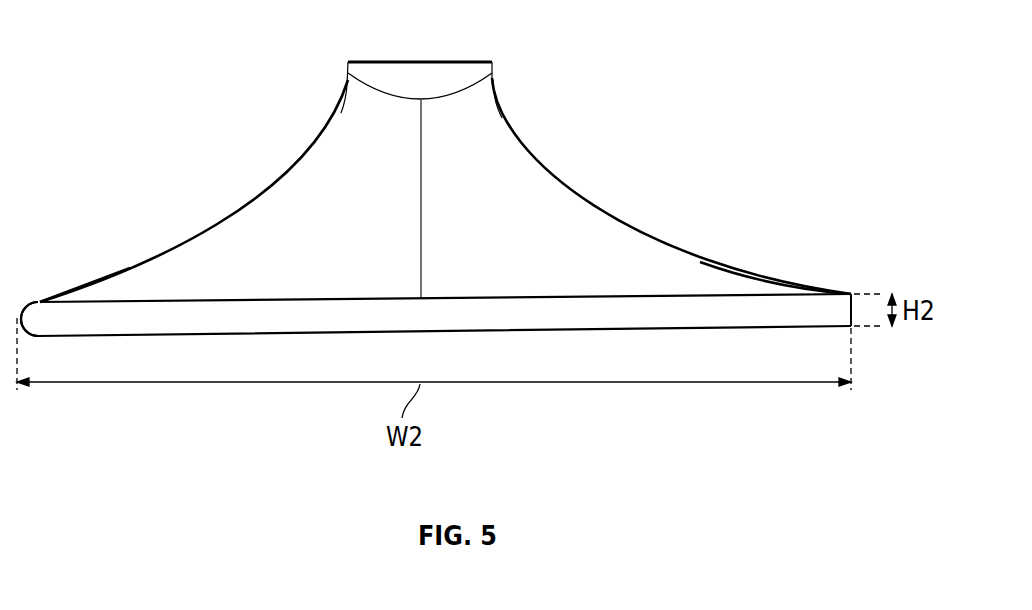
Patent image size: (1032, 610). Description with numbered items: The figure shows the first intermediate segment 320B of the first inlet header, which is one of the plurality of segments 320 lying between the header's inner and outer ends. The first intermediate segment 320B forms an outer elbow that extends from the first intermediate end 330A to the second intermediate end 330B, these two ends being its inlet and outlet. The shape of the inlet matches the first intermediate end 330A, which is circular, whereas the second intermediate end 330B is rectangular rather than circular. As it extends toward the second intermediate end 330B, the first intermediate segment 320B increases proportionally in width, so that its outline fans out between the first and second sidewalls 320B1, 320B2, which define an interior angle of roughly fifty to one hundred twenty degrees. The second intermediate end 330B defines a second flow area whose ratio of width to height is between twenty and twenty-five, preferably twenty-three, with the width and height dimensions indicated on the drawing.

The segments 320 is at (605, 212).
The first intermediate segment 320B is at (290, 175).
The first sidewall 320B1 is at (118, 277).
The second sidewall 320B2 is at (748, 270).
The first intermediate end 330A is at (493, 74).
The second intermediate end 330B is at (880, 275).